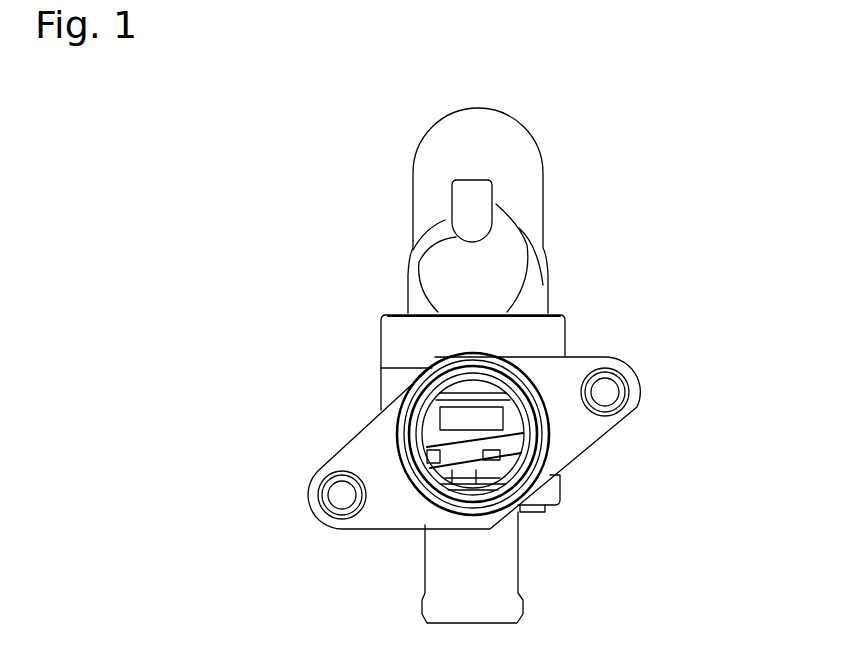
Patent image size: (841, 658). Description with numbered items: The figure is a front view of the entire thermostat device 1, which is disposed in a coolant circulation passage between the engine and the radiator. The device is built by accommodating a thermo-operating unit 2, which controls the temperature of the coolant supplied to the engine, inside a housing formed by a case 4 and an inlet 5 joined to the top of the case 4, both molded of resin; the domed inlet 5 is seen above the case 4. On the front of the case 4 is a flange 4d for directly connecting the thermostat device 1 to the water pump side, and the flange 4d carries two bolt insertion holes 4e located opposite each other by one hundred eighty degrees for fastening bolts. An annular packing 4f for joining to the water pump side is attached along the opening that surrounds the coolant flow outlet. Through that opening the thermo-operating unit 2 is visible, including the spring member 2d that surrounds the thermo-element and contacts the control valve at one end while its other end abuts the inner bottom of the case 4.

The thermostat device 1 is at (593, 198).
The thermo-operating unit 2 is at (515, 443).
The spring member 2d is at (433, 433).
The case 4 is at (557, 505).
The flange 4d is at (388, 524).
The bolt insertion holes 4e is at (609, 392).
The packing 4f is at (495, 512).
The inlet 5 is at (545, 248).